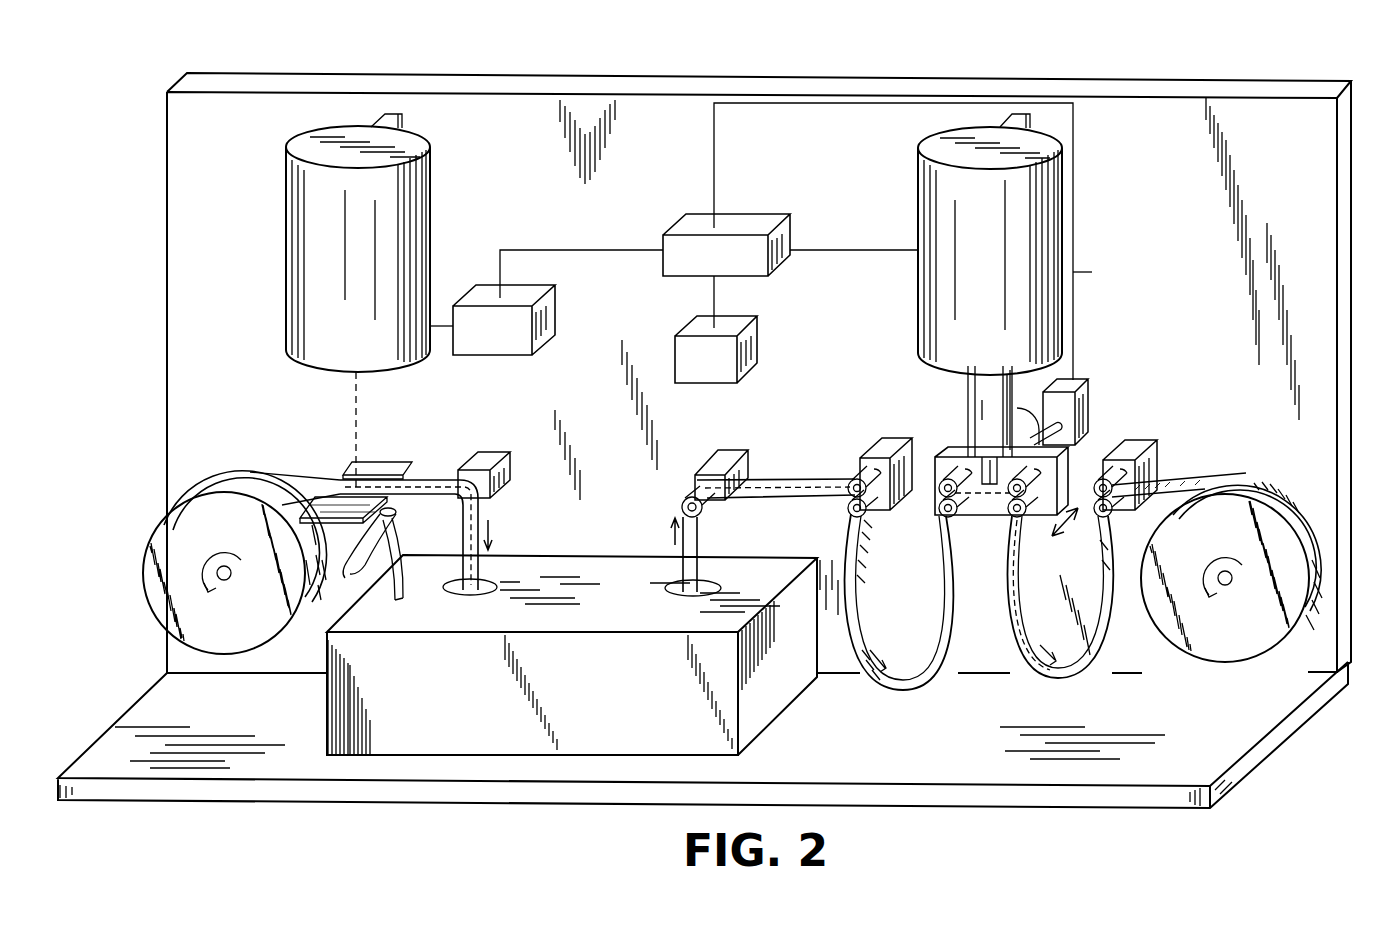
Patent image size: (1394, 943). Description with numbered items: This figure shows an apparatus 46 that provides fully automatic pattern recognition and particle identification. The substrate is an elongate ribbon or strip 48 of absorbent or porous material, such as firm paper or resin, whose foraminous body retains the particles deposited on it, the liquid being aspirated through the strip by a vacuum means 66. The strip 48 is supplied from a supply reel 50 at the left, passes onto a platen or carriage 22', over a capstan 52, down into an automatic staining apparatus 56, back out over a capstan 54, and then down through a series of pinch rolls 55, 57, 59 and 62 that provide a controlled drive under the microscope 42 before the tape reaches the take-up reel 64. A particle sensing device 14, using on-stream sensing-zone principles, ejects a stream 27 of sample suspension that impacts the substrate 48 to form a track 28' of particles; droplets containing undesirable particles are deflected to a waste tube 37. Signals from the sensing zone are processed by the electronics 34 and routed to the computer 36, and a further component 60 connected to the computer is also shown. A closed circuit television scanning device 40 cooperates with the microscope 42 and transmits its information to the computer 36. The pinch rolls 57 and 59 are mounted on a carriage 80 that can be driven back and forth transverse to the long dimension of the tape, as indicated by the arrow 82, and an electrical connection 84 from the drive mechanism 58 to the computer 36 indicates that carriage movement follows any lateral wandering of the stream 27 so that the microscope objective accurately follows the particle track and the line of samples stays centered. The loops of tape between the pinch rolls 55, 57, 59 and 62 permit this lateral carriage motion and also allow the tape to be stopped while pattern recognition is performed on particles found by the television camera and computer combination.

The particle sensing device 14 is at (298, 216).
The platen or carriage 22' is at (349, 455).
The stream of sample suspension 27 is at (358, 410).
The track of particles 28' is at (685, 502).
The electronics 34 is at (540, 340).
The computer 36 is at (732, 215).
The waste tube 37 is at (353, 563).
The closed circuit television scanning device 40 is at (1057, 252).
The microscope 42 is at (985, 488).
The apparatus 46 is at (163, 378).
The substrate strip 48 is at (421, 480).
The supply reel 50 is at (158, 566).
The capstan 52 is at (510, 480).
The capstan 54 is at (730, 458).
The pinch rolls 55 is at (893, 445).
The automatic staining apparatus 56 is at (520, 735).
The pinch rolls 57 is at (937, 480).
The drive mechanism 58 is at (1088, 405).
The pinch rolls 59 is at (1080, 532).
The readout 60 is at (751, 360).
The pinch rolls 62 is at (1152, 452).
The take-up reel 64 is at (1318, 604).
The vacuum means 66 is at (398, 562).
The carriage 80 is at (1060, 462).
The arrow 82 is at (1065, 540).
The electrical connection 84 is at (1102, 275).